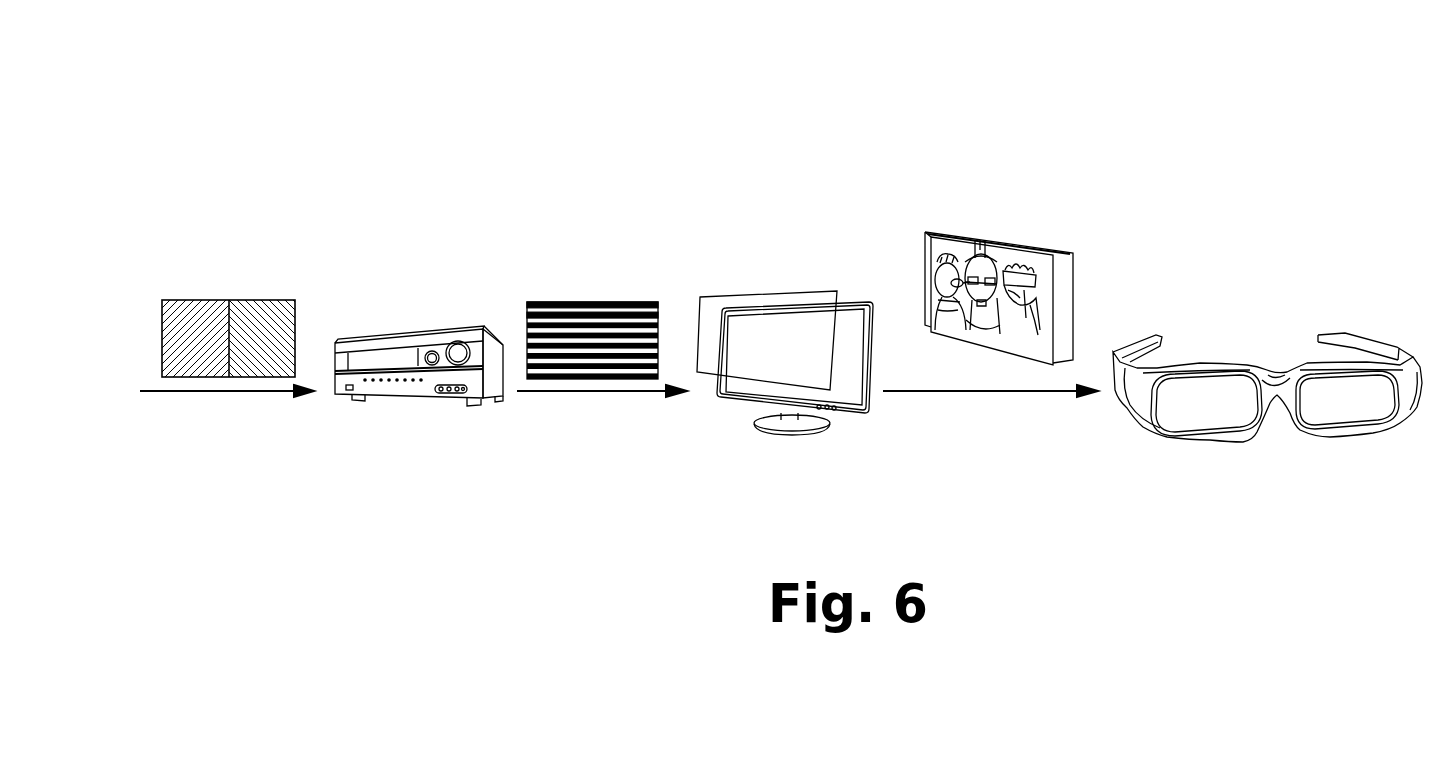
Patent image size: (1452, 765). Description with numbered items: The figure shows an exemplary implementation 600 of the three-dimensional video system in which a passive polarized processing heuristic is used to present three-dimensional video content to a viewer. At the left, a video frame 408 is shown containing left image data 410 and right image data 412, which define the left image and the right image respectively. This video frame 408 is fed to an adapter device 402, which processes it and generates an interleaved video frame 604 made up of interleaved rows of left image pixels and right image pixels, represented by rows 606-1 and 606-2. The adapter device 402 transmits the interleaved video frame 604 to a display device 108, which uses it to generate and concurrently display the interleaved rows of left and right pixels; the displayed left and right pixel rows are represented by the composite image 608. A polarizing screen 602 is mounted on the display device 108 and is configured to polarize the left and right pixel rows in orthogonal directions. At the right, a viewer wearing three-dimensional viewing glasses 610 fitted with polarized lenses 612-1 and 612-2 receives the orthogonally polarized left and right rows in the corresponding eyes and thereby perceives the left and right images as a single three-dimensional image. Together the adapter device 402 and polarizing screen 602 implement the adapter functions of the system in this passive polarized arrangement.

The implementation 600 is at (220, 140).
The video frame 408 is at (295, 296).
The left image data 410 is at (193, 377).
The right image data 412 is at (265, 377).
The adapter device 402 is at (395, 342).
The interleaved video frame 604 is at (598, 379).
The row 606-1 is at (666, 294).
The row 606-2 is at (659, 308).
The polarizing screen 602 is at (745, 293).
The display device 108 is at (868, 413).
The composite image 608 is at (1014, 243).
The 3D viewing glasses 610 is at (1358, 340).
The polarized lens 612-1 is at (1210, 420).
The polarized lens 612-2 is at (1343, 420).